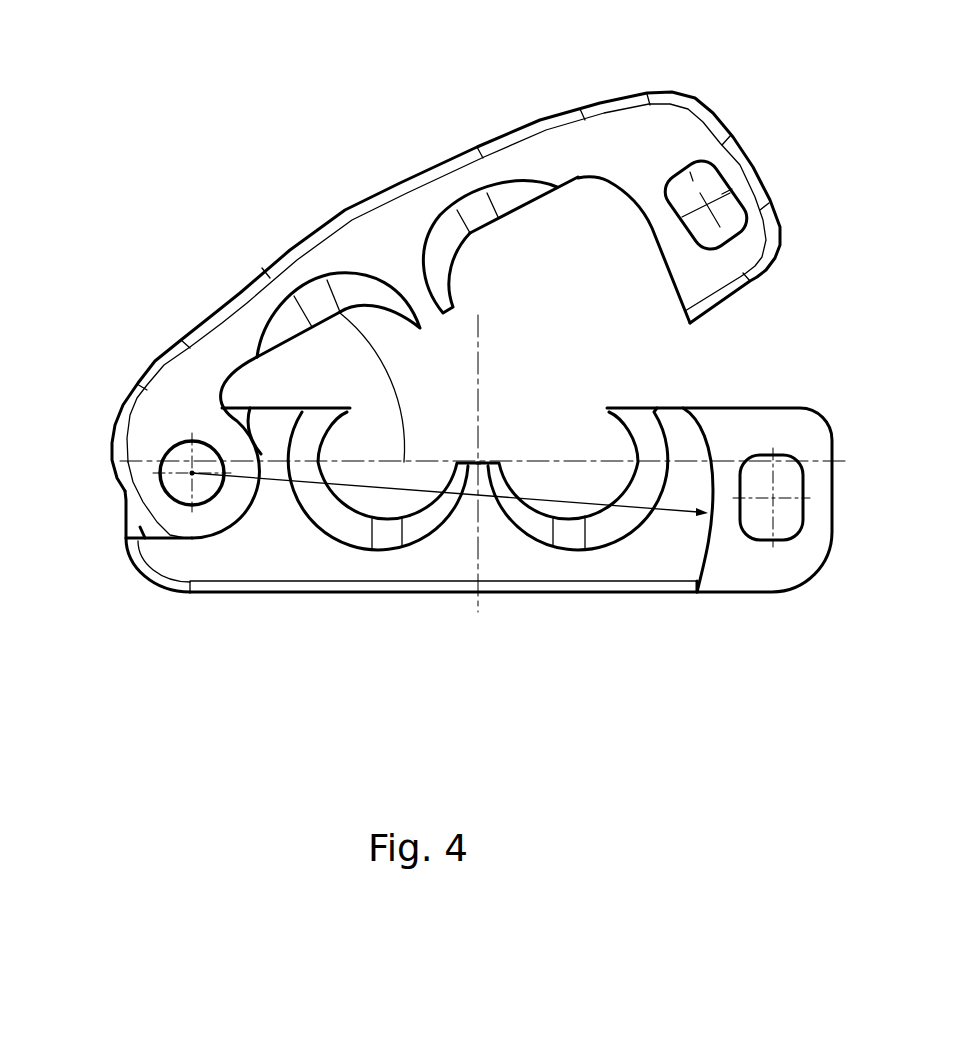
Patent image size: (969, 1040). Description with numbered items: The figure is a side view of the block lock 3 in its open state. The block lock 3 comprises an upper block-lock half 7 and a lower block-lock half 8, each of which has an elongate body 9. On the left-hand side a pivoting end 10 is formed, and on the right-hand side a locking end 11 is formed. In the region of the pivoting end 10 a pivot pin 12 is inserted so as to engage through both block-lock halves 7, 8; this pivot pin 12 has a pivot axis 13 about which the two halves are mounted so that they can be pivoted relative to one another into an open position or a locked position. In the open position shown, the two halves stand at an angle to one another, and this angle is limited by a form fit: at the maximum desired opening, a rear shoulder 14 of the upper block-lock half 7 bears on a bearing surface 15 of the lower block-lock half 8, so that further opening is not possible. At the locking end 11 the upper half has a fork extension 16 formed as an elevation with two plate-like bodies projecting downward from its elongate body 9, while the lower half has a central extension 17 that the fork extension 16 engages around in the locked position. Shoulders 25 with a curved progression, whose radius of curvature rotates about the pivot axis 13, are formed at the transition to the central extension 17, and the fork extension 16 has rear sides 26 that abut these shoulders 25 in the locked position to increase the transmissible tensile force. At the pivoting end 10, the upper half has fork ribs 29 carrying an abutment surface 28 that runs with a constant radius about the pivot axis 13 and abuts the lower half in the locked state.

The block lock 3 is at (138, 150).
The upper block-lock half 7 is at (365, 190).
The lower block-lock half 8 is at (507, 606).
The elongate body 9 is at (417, 207).
The pivoting end 10 is at (82, 523).
The locking end 11 is at (888, 481).
The pivot pin 12 is at (199, 485).
The pivot axis 13 is at (191, 476).
The rear shoulder 14 is at (112, 486).
The bearing surface 15 is at (124, 528).
The fork extension 16 is at (757, 242).
The central extension 17 is at (770, 580).
The shoulders 25 is at (709, 552).
The rear sides 26 is at (662, 264).
The abutment surface 28 is at (263, 452).
The fork ribs 29 is at (233, 502).